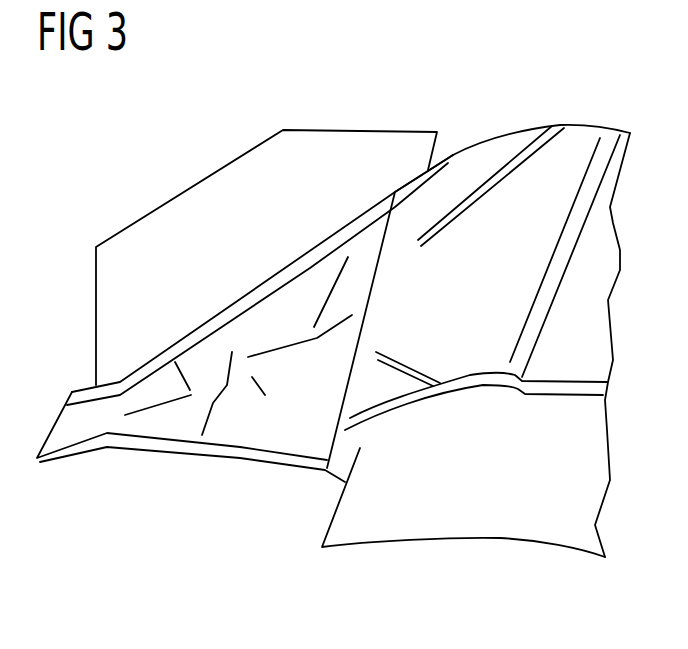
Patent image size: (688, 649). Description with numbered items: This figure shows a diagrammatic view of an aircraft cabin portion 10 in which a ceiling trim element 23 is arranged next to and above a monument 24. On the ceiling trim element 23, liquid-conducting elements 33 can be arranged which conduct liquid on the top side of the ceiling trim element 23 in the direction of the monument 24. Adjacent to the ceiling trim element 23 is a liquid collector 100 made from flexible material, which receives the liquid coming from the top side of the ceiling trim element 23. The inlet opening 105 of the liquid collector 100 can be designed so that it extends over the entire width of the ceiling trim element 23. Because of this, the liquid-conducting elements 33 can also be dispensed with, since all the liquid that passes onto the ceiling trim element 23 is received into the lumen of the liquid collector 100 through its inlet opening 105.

The aircraft cabin portion 10 is at (112, 161).
The ceiling trim element 23 is at (577, 140).
The monument 24 is at (210, 198).
The liquid-conducting elements 33 is at (500, 160).
The liquid collector 100 is at (194, 434).
The inlet opening 105 is at (413, 210).